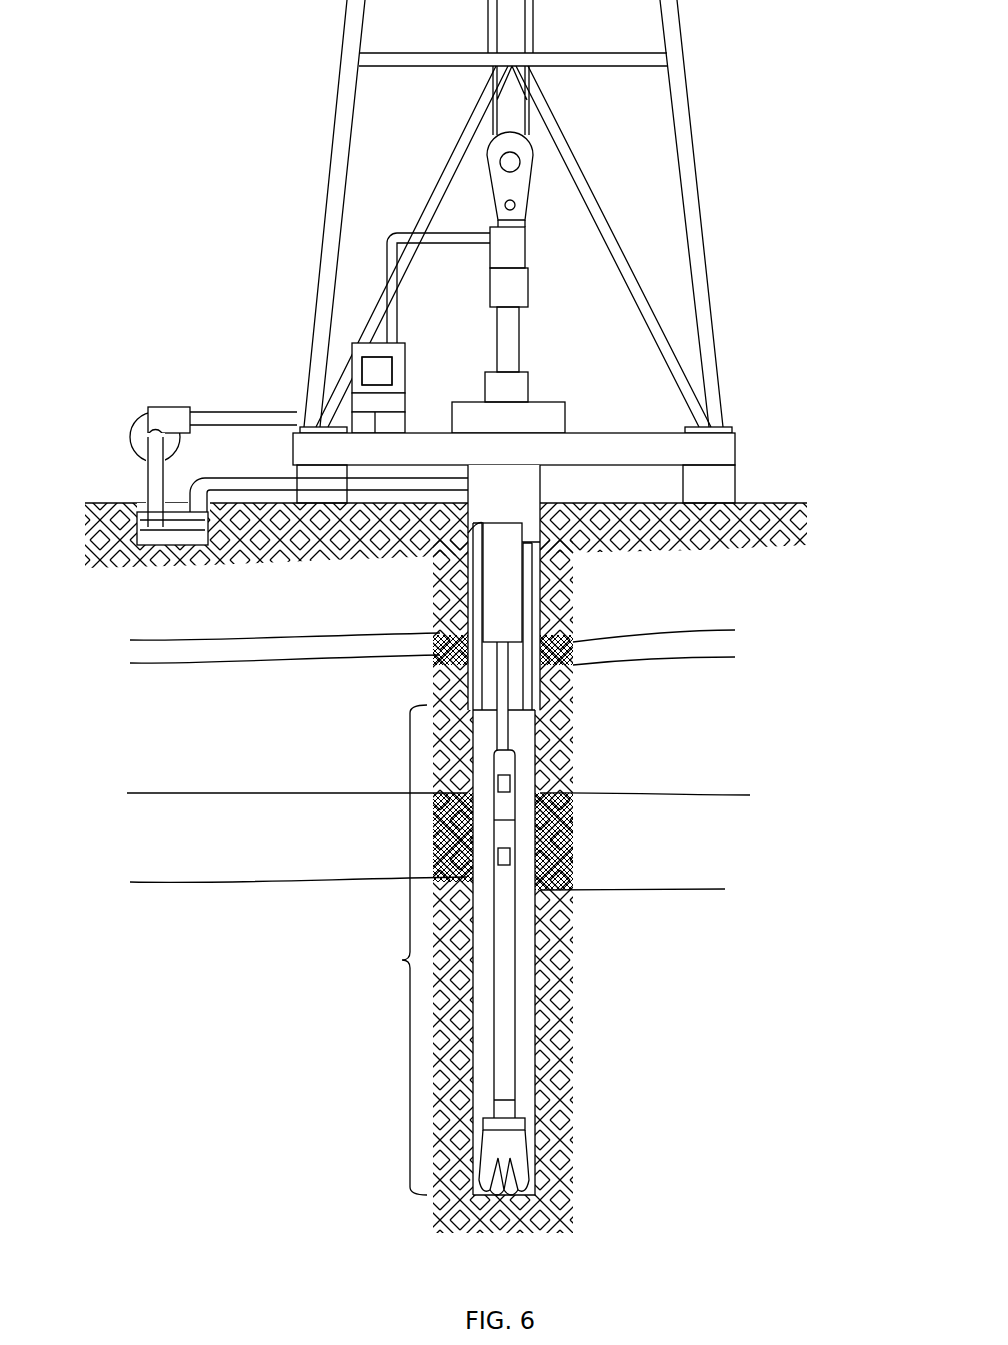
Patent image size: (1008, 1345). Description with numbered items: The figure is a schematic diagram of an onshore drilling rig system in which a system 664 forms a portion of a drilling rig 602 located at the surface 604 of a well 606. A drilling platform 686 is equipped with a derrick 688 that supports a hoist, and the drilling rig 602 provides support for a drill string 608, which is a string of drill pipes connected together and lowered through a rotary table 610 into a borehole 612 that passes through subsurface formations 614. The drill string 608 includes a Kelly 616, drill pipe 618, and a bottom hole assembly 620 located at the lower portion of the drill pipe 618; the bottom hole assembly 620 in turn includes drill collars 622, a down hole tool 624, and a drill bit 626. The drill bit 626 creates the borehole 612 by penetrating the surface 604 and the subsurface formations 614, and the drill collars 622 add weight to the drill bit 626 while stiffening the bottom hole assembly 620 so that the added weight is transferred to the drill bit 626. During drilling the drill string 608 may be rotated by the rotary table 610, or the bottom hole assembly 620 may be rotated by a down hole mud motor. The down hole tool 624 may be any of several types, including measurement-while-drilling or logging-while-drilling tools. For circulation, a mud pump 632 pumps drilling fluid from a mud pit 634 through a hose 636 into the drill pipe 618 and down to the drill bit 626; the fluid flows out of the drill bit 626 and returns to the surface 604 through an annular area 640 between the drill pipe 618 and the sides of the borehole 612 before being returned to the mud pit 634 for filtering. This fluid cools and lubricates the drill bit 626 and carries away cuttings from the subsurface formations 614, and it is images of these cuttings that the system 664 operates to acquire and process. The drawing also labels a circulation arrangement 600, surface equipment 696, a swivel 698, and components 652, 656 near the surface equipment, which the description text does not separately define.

The drilling fluid circulation system 600 is at (404, 327).
The drilling rig 602 is at (708, 225).
The surface 604 is at (792, 502).
The well 606 is at (545, 502).
The drill string 608 is at (520, 932).
The rotary table 610 is at (565, 421).
The borehole 612 is at (535, 1027).
The subsurface formations 614 is at (108, 638).
The Kelly 616 is at (520, 333).
The drill pipe 618 is at (505, 682).
The bottom hole assembly 620 is at (387, 950).
The drill collars 622 is at (522, 598).
The down hole tool 624 is at (503, 1063).
The drill bit 626 is at (512, 1143).
The mud pump 632 is at (165, 407).
The mud pit 634 is at (158, 545).
The hose 636 is at (272, 411).
The annular area 640 is at (527, 755).
The processor 652 is at (345, 350).
The memory 656 is at (377, 371).
The system 664 is at (252, 130).
The drilling platform 686 is at (738, 442).
The derrick 688 is at (688, 93).
The surface equipment 696 is at (392, 370).
The swivel 698 is at (530, 386).